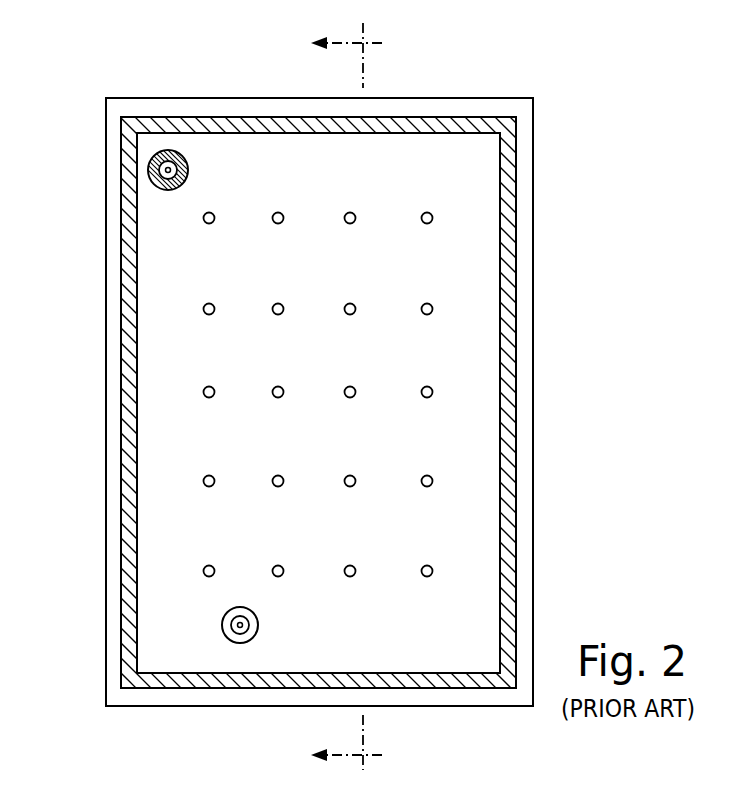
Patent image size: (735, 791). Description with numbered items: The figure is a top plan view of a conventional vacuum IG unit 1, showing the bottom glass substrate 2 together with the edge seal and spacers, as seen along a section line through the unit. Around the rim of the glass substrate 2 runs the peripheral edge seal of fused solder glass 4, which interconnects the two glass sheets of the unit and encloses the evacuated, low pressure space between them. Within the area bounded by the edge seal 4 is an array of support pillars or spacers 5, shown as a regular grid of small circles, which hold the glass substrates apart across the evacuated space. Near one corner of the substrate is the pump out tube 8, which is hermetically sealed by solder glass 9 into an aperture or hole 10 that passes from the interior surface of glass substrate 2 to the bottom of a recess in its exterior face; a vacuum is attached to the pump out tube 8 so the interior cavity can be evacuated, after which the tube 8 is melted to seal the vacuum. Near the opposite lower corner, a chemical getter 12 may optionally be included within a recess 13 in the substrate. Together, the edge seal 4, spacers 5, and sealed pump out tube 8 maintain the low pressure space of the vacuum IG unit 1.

The vacuum IG unit 1 is at (95, 596).
The glass substrate 2 is at (313, 105).
The peripheral edge seal of fused solder glass 4 is at (233, 126).
The support pillars or spacers 5 is at (434, 309).
The pump out tube 8 is at (150, 163).
The solder glass 9 is at (168, 191).
The aperture or hole 10 is at (166, 172).
The chemical getter 12 is at (240, 627).
The recess 13 is at (253, 622).